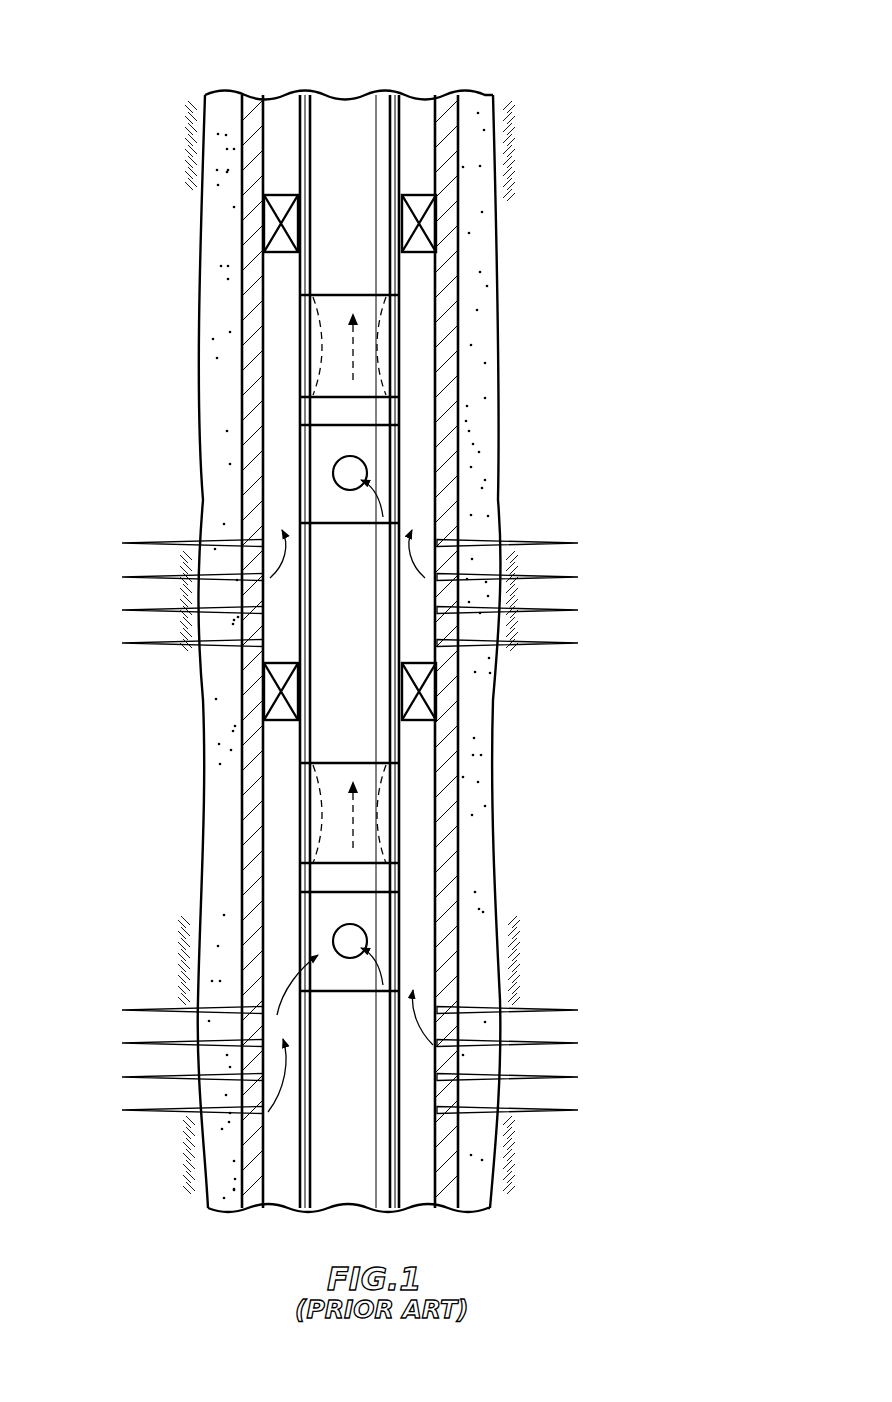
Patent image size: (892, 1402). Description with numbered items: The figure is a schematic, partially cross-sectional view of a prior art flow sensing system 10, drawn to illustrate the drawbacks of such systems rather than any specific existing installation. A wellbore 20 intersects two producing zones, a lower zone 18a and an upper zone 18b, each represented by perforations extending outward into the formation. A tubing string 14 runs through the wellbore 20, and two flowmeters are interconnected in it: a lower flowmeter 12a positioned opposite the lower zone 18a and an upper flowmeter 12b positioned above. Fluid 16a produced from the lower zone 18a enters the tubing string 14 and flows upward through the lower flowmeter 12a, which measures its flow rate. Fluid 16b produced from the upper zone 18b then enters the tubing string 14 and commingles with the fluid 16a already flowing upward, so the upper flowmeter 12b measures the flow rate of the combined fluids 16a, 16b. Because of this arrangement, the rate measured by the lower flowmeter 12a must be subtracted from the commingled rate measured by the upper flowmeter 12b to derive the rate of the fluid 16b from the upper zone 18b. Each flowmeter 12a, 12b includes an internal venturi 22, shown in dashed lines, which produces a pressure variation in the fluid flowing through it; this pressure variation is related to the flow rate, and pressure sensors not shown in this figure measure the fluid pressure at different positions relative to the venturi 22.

The flow sensing system 10 is at (605, 183).
The lower flowmeter 12a is at (296, 797).
The upper flowmeter 12b is at (296, 315).
The tubing string 14 is at (407, 107).
The fluid produced from the lower zone 16a is at (289, 996).
The fluid produced from the upper zone 16b is at (283, 560).
The lower zone 18a is at (585, 1055).
The upper zone 18b is at (580, 560).
The wellbore 20 is at (490, 718).
The venturi 22 is at (395, 300).